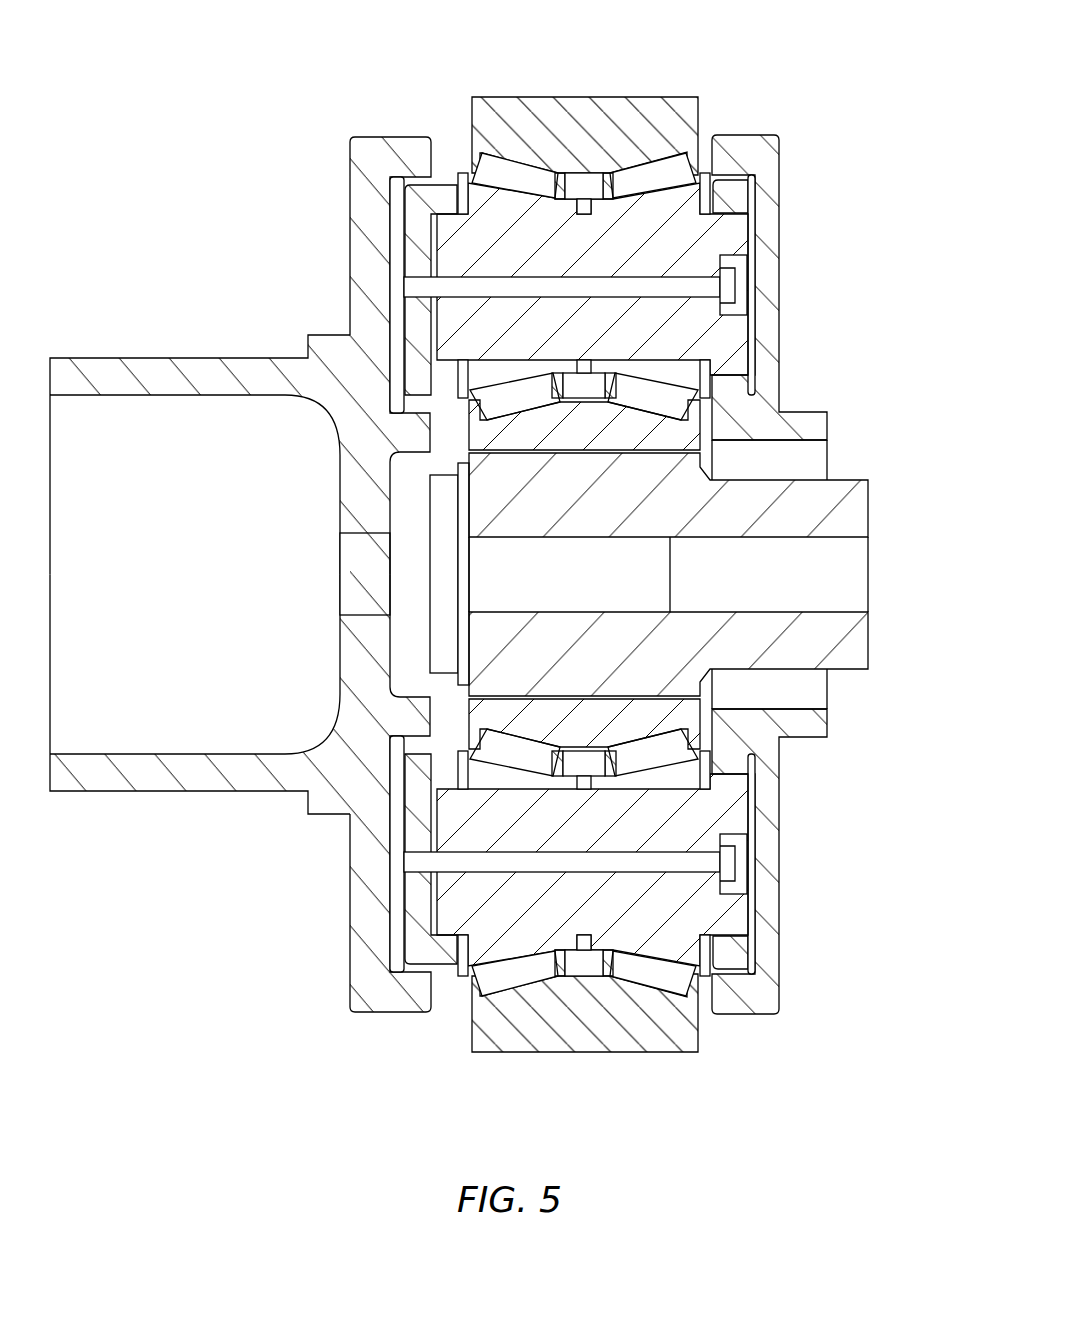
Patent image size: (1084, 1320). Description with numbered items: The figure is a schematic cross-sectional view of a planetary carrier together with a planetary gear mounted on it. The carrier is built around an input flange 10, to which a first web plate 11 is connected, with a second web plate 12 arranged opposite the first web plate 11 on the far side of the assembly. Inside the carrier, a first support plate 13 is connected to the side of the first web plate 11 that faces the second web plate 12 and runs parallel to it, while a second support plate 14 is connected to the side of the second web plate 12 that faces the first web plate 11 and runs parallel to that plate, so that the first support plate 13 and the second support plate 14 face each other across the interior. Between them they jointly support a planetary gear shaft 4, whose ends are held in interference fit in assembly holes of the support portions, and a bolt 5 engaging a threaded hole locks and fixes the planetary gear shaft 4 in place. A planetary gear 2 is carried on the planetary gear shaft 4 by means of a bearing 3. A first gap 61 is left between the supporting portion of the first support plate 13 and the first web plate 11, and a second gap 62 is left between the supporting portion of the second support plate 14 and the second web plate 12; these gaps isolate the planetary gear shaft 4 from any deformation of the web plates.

The planetary gear 2 is at (520, 124).
The bearing 3 is at (677, 745).
The planetary gear shaft 4 is at (680, 248).
The bolt 5 is at (703, 290).
The input flange 10 is at (367, 488).
The first web plate 11 is at (376, 222).
The second web plate 12 is at (763, 192).
The first support plate 13 is at (420, 318).
The second support plate 14 is at (725, 422).
The first gap 61 is at (395, 835).
The second gap 62 is at (757, 967).